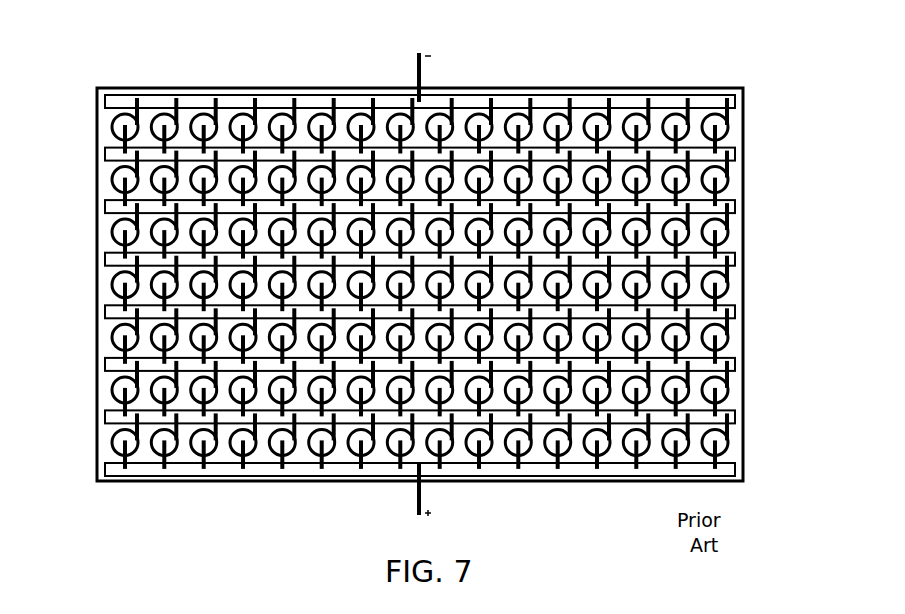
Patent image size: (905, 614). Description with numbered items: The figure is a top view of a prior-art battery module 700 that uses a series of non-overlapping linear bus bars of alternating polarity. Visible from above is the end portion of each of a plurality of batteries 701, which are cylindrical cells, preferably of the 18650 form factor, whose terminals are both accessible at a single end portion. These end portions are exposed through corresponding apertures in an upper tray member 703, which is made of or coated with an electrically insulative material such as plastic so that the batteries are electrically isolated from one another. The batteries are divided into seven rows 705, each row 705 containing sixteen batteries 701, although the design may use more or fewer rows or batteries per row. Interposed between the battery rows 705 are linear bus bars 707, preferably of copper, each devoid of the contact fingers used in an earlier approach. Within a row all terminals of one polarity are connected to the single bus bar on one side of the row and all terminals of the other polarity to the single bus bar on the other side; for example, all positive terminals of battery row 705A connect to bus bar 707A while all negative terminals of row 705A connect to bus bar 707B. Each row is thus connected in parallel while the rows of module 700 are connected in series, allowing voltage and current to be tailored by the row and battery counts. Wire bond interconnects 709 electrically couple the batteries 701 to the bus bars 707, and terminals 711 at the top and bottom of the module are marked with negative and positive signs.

The battery module 700 is at (116, 71).
The battery 701 is at (157, 233).
The upper tray member 703 is at (632, 88).
The battery row 705 is at (740, 230).
The battery row 705A is at (742, 442).
The linear bus bar 707 is at (108, 205).
The bus bar 707A is at (108, 467).
The bus bar 707B is at (108, 417).
The wire bond interconnect 709 is at (728, 395).
The terminal 711 is at (418, 73).